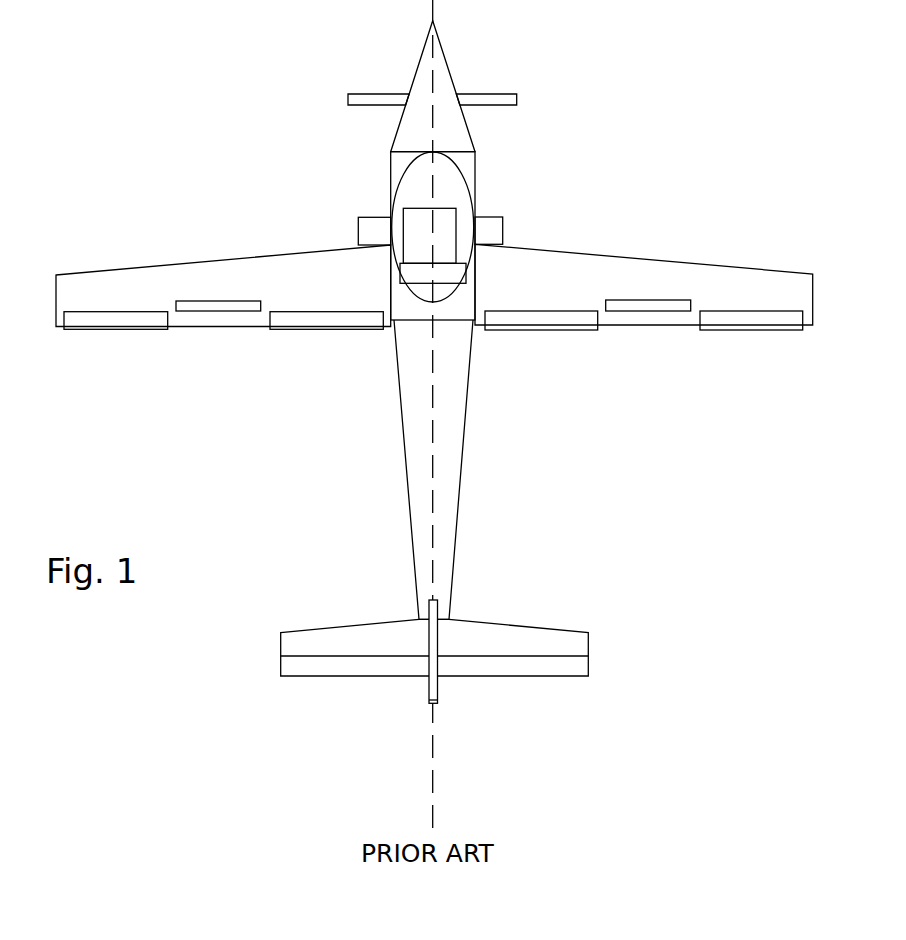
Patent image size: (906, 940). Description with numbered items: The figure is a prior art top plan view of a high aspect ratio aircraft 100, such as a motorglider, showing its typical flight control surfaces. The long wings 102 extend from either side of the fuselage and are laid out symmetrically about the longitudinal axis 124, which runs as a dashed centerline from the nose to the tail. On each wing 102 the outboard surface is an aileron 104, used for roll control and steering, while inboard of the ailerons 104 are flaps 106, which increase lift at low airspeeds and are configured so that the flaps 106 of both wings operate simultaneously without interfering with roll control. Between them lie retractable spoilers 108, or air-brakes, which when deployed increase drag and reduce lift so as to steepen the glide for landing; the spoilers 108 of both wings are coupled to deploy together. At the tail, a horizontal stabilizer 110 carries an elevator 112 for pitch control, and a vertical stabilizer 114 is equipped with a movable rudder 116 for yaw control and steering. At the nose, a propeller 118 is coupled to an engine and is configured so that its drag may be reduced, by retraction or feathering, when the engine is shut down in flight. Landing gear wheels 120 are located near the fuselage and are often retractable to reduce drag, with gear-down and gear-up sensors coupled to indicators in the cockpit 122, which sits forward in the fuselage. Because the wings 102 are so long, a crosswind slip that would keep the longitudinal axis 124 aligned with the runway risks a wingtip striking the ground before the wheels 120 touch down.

The high aspect ratio aircraft 100 is at (431, 391).
The wing 102 is at (431, 301).
The aileron 104 is at (134, 323).
The flap 106 is at (358, 320).
The retractable spoiler 108 is at (237, 313).
The horizontal stabilizer 110 is at (435, 660).
The elevator 112 is at (378, 666).
The vertical stabilizer 114 is at (437, 607).
The rudder 116 is at (430, 700).
The propeller 118 is at (478, 103).
The wheel 120 is at (488, 226).
The cockpit 122 is at (448, 187).
The longitudinal axis 124 is at (443, 779).